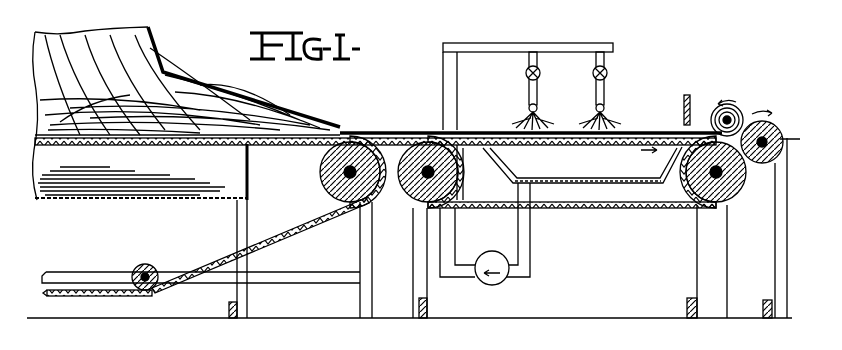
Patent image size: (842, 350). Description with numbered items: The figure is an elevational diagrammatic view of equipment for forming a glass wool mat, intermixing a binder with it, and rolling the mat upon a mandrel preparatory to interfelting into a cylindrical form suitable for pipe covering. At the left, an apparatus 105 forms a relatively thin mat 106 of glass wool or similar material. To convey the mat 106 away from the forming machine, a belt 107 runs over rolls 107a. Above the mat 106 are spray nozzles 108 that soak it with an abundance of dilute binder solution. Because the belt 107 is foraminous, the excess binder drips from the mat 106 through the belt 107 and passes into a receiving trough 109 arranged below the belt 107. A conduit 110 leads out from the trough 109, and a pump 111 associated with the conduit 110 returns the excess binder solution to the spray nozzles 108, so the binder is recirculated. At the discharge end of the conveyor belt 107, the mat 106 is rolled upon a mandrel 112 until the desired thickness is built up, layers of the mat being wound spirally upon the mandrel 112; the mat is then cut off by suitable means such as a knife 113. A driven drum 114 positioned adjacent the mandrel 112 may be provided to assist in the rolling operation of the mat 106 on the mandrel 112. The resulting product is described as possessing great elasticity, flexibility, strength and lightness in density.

The apparatus for forming a mat 105 is at (299, 106).
The mat 106 is at (423, 112).
The belt 107 is at (469, 148).
The rolls 107a is at (690, 206).
The spray nozzles 108 is at (540, 109).
The receiving trough 109 is at (572, 186).
The conduit 110 is at (532, 256).
The pump 111 is at (503, 282).
The mandrel 112 is at (750, 98).
The knife 113 is at (684, 104).
The driven drum 114 is at (757, 165).